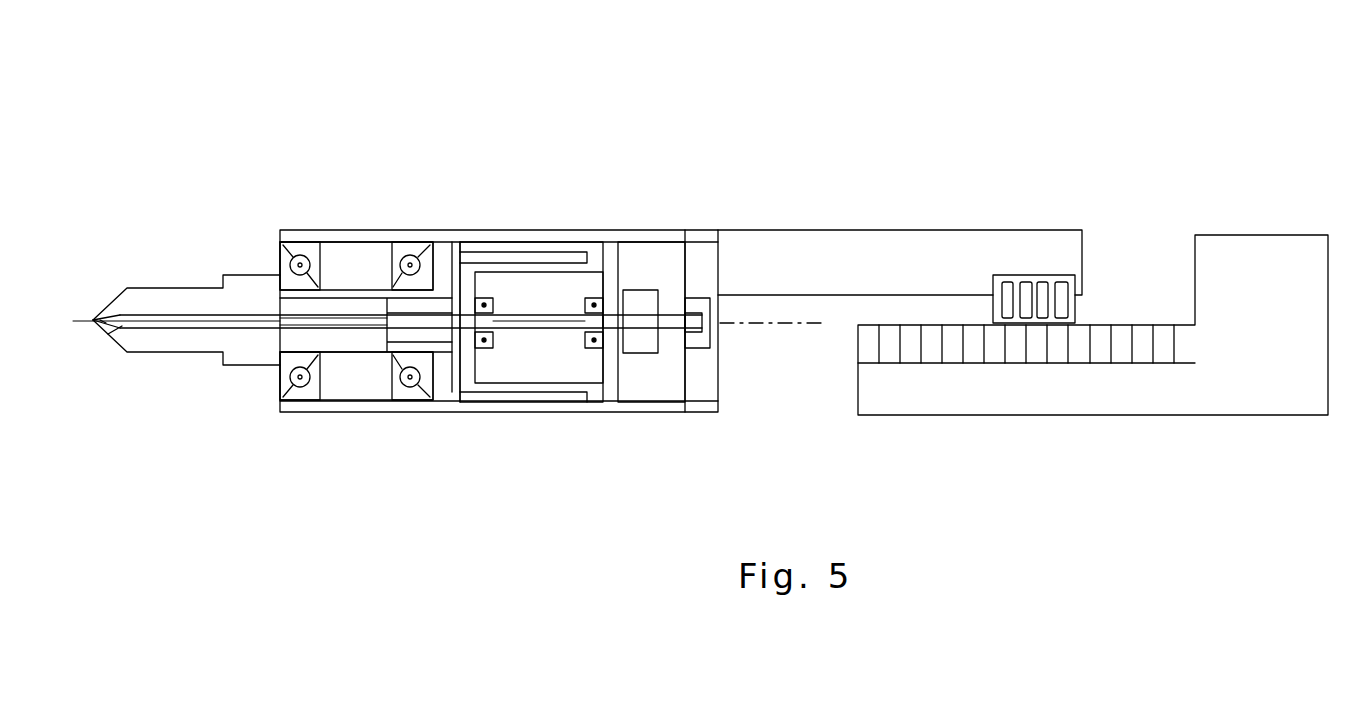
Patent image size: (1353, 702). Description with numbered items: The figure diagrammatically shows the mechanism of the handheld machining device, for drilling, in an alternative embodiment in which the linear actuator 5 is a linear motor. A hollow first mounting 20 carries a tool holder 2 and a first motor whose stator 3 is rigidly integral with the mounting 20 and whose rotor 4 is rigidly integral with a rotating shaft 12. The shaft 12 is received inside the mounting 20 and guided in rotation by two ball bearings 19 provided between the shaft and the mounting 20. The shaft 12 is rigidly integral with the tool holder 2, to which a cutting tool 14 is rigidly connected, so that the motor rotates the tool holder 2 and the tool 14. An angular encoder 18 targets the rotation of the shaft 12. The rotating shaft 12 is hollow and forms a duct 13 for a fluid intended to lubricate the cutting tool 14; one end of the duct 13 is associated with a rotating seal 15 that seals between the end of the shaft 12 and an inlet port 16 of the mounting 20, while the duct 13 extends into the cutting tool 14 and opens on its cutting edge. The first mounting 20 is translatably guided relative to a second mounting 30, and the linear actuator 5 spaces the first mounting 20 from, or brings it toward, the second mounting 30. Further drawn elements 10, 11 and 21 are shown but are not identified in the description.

The tool holder 2 is at (278, 272).
The stator 3 is at (508, 275).
The rotor 4 is at (458, 262).
The linear actuator 5 is at (1100, 127).
The probe rod 10 is at (398, 326).
The bearing 11 is at (605, 327).
The rotating shaft 12 is at (520, 333).
The duct 13 is at (540, 328).
The cutting tool 14 is at (145, 285).
The rotating seal 15 is at (712, 292).
The inlet port 16 is at (723, 330).
The angular encoder 18 is at (640, 290).
The ball bearings 19 is at (412, 240).
The first mounting 20 is at (310, 232).
The probe tip 21 is at (102, 342).
The second mounting 30 is at (990, 405).